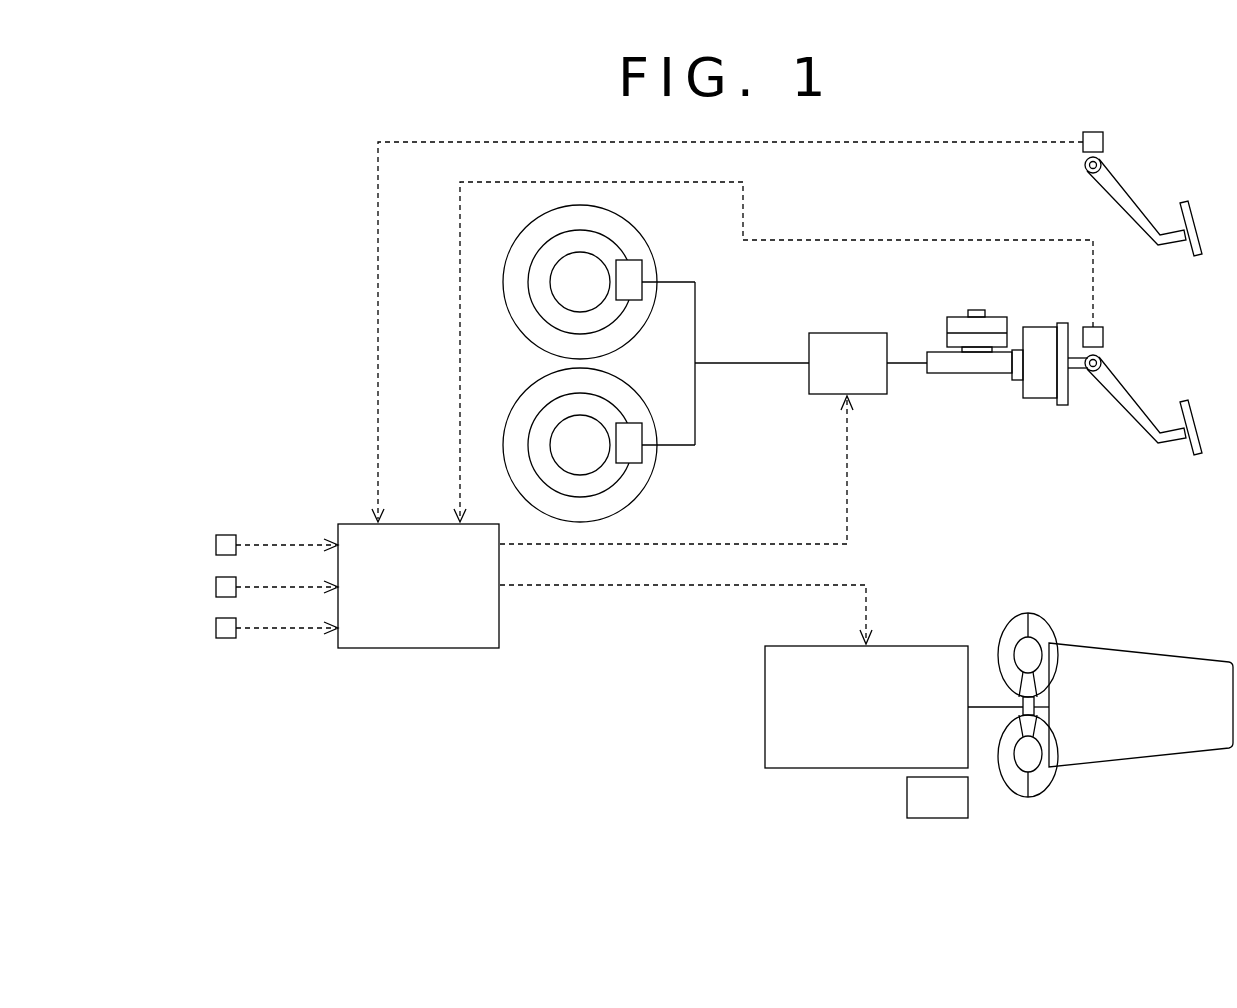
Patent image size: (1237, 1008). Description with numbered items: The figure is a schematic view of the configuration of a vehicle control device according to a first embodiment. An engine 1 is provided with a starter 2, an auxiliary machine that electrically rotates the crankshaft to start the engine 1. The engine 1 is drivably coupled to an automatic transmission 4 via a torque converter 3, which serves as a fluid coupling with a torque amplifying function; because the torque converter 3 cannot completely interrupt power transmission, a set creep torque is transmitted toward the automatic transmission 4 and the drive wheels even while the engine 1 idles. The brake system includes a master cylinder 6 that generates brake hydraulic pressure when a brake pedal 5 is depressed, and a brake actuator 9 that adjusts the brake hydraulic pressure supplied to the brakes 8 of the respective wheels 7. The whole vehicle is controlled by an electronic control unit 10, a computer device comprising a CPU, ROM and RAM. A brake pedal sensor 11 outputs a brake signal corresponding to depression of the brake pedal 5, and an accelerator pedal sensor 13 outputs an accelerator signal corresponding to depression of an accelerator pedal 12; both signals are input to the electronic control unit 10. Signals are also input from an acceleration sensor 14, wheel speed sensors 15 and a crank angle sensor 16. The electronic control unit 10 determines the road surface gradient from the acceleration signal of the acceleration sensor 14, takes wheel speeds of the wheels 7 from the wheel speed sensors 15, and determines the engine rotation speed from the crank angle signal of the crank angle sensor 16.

The engine 1 is at (800, 769).
The starter 2 is at (938, 819).
The torque converter 3 is at (1018, 798).
The automatic transmission 4 is at (1133, 768).
The brake pedal 5 is at (1122, 412).
The master cylinder 6 is at (975, 374).
The wheels 7 is at (500, 268).
The brakes 8 is at (644, 272).
The brake actuator 9 is at (848, 333).
The electronic control unit 10 is at (415, 650).
The brake pedal sensor 11 is at (1105, 338).
The accelerator pedal 12 is at (1118, 206).
The accelerator pedal sensor 13 is at (1105, 143).
The acceleration sensor 14 is at (214, 545).
The wheel speed sensors 15 is at (214, 587).
The crank angle sensor 16 is at (214, 628).